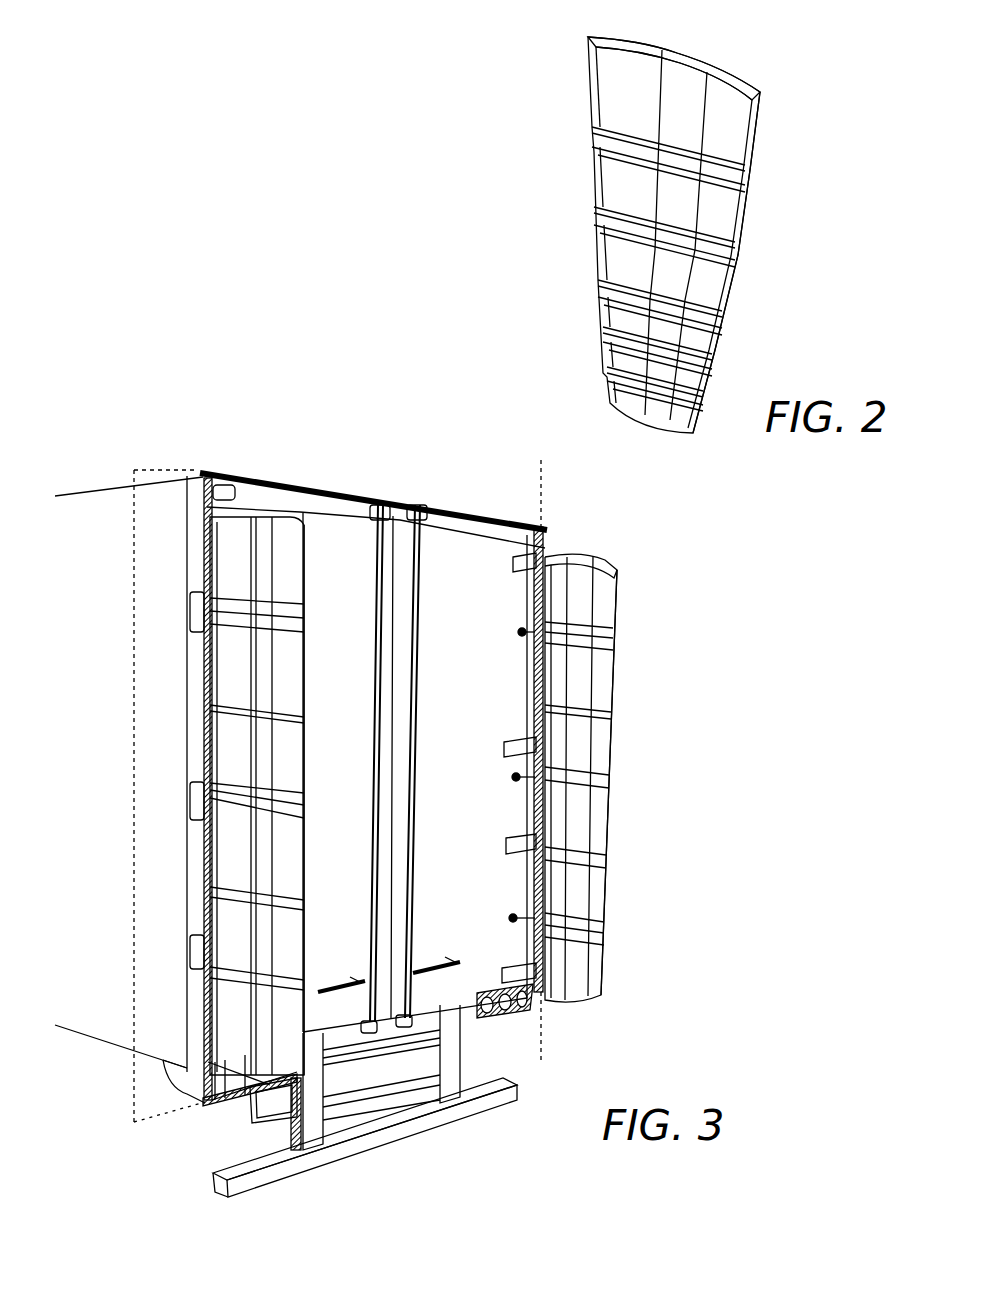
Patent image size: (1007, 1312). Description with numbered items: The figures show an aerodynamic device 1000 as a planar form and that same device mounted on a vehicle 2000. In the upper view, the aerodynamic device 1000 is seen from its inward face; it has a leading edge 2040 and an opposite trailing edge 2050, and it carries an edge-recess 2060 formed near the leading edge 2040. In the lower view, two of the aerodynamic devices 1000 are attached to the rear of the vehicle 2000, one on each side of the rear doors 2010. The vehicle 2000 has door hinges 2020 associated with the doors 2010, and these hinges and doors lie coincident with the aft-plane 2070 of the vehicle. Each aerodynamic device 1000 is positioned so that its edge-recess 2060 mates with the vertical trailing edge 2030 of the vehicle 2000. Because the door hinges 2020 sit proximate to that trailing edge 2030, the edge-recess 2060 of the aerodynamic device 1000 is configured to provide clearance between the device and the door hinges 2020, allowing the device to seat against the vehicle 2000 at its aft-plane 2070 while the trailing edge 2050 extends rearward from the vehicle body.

In FIG. 2, the aerodynamic device 1000 is at (822, 150).
In FIG. 3, the aerodynamic device 1000 is at (652, 596).
In FIG. 3, the vehicle 2000 is at (92, 452).
In FIG. 3, the doors 2010 is at (335, 520).
In FIG. 3, the door hinges 2020 is at (513, 567).
In FIG. 3, the vertical trailing edge 2030 is at (545, 486).
In FIG. 2, the leading edge 2040 is at (566, 182).
In FIG. 2, the trailing edge 2050 is at (728, 297).
In FIG. 3, the trailing edge 2050 is at (303, 756).
In FIG. 2, the edge-recess 2060 is at (587, 62).
In FIG. 3, the edge-recess 2060 is at (556, 549).
In FIG. 3, the aft-plane 2070 is at (168, 478).